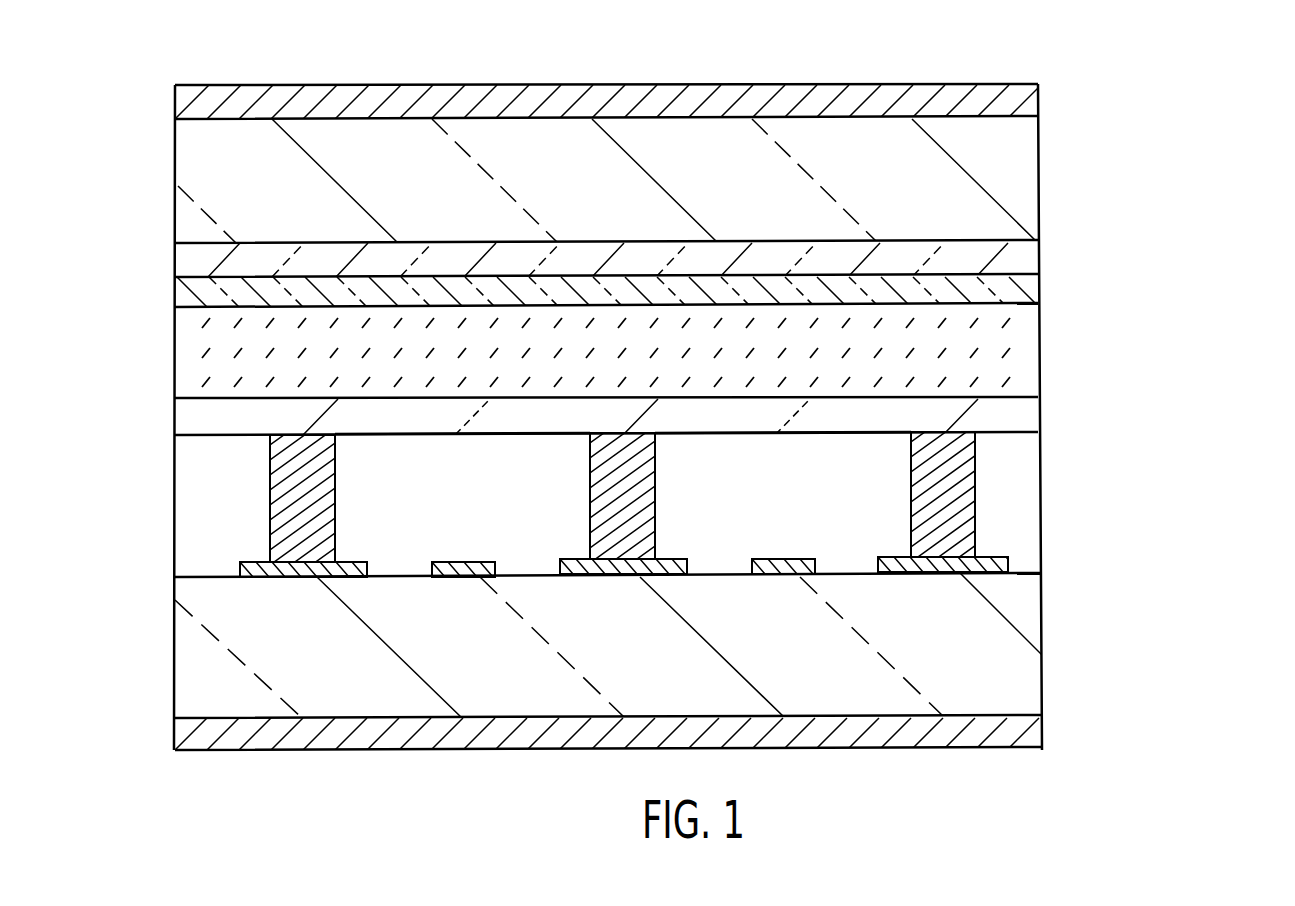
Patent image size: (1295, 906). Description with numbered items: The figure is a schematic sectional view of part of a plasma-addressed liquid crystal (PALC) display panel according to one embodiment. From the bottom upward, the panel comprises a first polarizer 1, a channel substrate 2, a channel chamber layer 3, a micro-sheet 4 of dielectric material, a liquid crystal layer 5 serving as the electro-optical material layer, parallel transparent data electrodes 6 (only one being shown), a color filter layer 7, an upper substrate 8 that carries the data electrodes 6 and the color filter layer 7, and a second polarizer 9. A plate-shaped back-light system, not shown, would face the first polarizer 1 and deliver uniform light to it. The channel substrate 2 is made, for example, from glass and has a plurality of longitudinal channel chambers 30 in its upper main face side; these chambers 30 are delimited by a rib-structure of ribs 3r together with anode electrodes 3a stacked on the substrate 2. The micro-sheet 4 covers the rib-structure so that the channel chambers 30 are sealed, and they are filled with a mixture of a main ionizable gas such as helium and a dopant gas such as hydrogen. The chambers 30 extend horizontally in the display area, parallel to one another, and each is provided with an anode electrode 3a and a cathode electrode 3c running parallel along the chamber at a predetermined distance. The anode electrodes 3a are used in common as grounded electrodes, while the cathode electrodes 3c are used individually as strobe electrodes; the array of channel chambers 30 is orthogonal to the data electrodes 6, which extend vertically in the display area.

The first polarizer 1 is at (641, 698).
The channel substrate 2 is at (646, 633).
The channel chamber layer 3 is at (739, 510).
The anode electrode 3a is at (682, 528).
The cathode electrode 3c is at (662, 533).
The rib 3r is at (690, 510).
The micro-sheet 4 is at (645, 387).
The liquid crystal layer 5 is at (646, 335).
The data electrode 6 is at (650, 256).
The color filter layer 7 is at (647, 220).
The upper substrate 8 is at (1040, 172).
The second polarizer 9 is at (1037, 97).
The channel chamber 30 is at (480, 496).